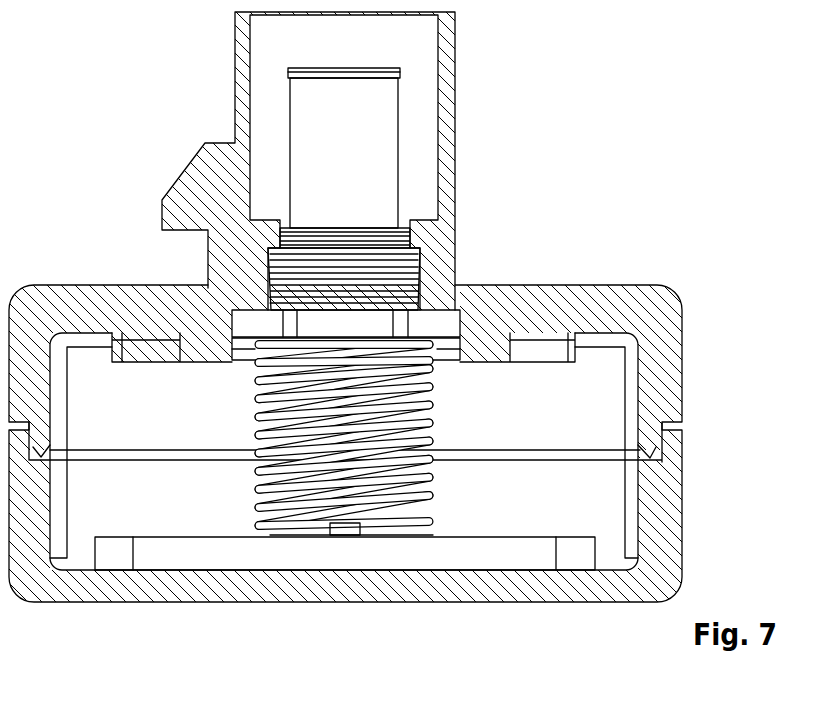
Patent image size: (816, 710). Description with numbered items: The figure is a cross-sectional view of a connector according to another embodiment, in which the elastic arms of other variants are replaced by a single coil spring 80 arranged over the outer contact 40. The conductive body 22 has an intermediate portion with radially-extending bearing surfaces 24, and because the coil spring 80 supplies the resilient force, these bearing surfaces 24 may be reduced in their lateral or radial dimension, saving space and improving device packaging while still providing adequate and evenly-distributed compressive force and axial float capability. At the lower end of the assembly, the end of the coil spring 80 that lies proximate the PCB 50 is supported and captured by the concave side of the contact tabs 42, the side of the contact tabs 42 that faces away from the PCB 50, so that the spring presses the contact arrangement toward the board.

The conductive body 22 is at (381, 272).
The radially-extending bearing surface 24 is at (440, 325).
The outer contact 40 is at (323, 398).
The contact tab 42 is at (425, 528).
The PCB 50 is at (320, 557).
The coil spring 80 is at (417, 398).